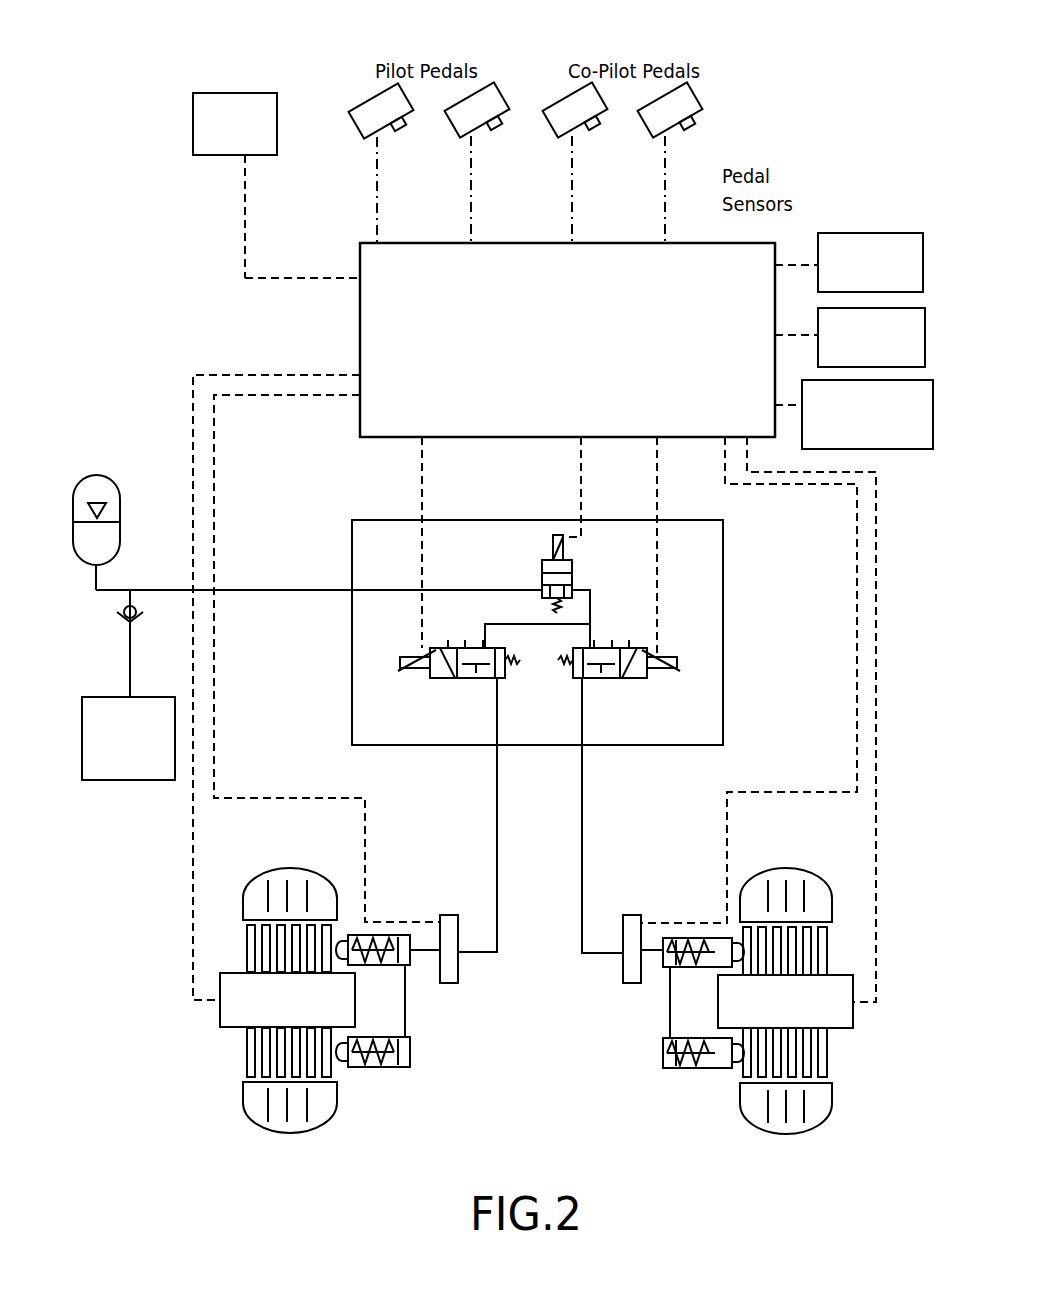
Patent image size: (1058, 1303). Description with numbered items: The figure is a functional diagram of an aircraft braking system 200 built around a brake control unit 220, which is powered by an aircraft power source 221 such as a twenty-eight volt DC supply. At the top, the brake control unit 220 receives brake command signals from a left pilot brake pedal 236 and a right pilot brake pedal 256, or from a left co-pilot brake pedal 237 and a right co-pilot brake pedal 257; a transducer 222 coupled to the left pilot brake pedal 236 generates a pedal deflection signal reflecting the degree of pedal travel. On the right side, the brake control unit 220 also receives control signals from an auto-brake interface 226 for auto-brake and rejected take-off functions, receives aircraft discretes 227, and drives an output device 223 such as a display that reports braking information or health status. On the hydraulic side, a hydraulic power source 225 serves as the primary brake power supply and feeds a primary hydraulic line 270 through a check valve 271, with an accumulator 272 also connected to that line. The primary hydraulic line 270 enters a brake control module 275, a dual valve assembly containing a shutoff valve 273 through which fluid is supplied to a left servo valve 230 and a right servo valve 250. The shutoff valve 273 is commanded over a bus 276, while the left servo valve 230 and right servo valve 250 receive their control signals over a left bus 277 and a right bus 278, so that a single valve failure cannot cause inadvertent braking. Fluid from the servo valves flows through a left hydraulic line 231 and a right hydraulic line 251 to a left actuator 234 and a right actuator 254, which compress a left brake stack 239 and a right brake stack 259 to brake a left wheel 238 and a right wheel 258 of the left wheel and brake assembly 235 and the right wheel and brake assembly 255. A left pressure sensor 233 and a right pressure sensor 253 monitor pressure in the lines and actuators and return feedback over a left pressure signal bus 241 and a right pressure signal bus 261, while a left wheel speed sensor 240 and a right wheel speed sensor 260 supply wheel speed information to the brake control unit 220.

The braking system 200 is at (184, 88).
The aircraft power source 221 is at (240, 93).
The left pilot brake pedal 236 is at (368, 94).
The right pilot brake pedal 256 is at (503, 92).
The left co-pilot brake pedal 237 is at (552, 110).
The right co-pilot brake pedal 257 is at (703, 96).
The transducer 222 is at (395, 130).
The brake control unit 220 is at (548, 377).
The auto-brake interface 226 is at (905, 233).
The aircraft discretes 227 is at (818, 322).
The output device 223 is at (802, 388).
The left pressure signal bus 241 is at (215, 484).
The right pressure signal bus 261 is at (856, 592).
The left bus 277 is at (423, 478).
The bus 276 is at (580, 462).
The right bus 278 is at (656, 563).
The accumulator 272 is at (110, 487).
The primary hydraulic line 270 is at (162, 590).
The check valve 271 is at (117, 616).
The hydraulic power source 225 is at (128, 780).
The brake control module 275 is at (634, 745).
The shutoff valve 273 is at (572, 582).
The left servo valve 230 is at (470, 678).
The right servo valve 250 is at (613, 678).
The left hydraulic line 231 is at (497, 812).
The right hydraulic line 251 is at (582, 828).
The left wheel and brake assembly 235 is at (231, 1122).
The right wheel and brake assembly 255 is at (850, 1076).
The left wheel 238 is at (265, 868).
The right wheel 258 is at (800, 868).
The left brake stack 239 is at (247, 958).
The right brake stack 259 is at (830, 958).
The left wheel speed sensor 240 is at (215, 1018).
The right wheel speed sensor 260 is at (853, 1018).
The left actuator 234 is at (360, 1067).
The right actuator 254 is at (660, 1055).
The left pressure sensor 233 is at (445, 915).
The right pressure sensor 253 is at (636, 915).